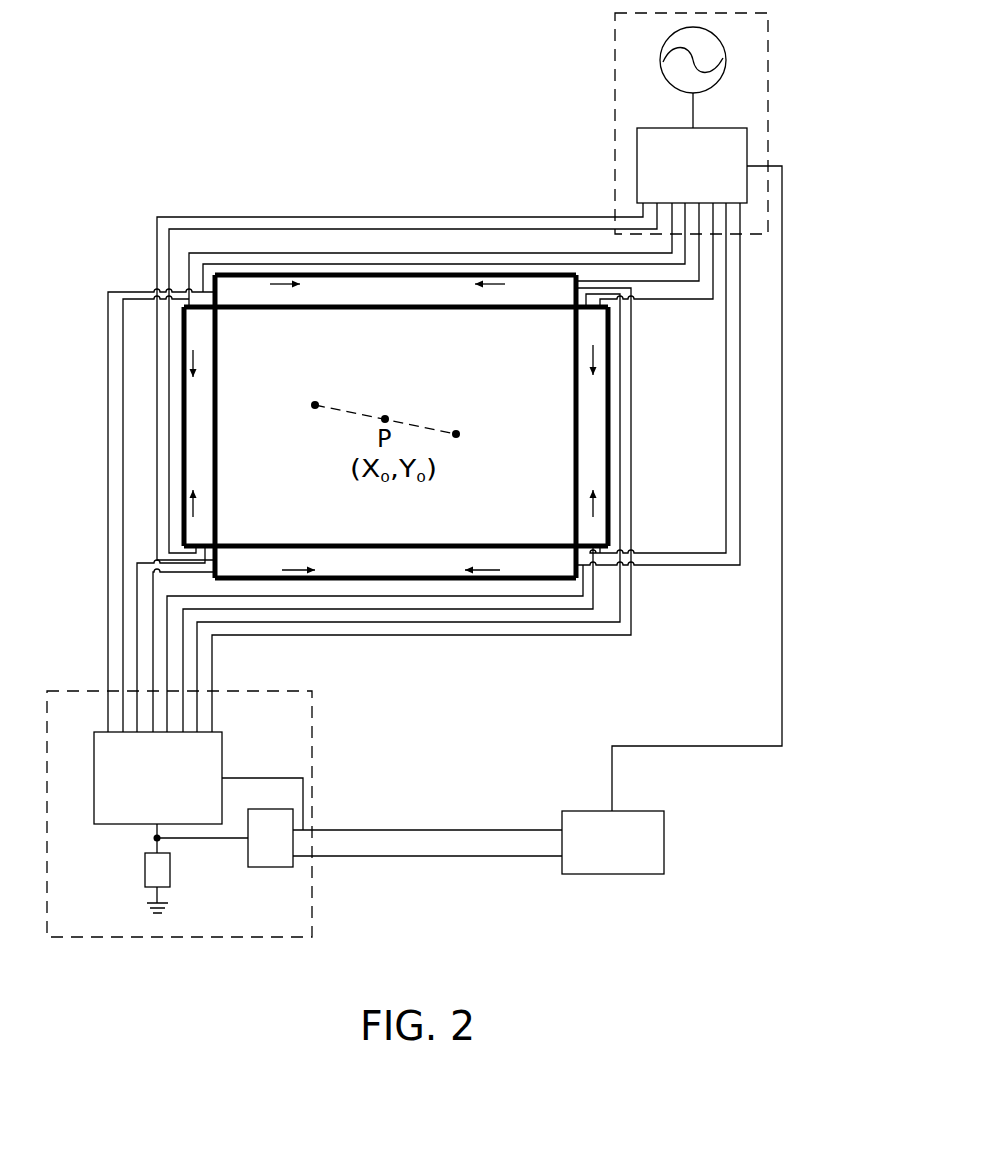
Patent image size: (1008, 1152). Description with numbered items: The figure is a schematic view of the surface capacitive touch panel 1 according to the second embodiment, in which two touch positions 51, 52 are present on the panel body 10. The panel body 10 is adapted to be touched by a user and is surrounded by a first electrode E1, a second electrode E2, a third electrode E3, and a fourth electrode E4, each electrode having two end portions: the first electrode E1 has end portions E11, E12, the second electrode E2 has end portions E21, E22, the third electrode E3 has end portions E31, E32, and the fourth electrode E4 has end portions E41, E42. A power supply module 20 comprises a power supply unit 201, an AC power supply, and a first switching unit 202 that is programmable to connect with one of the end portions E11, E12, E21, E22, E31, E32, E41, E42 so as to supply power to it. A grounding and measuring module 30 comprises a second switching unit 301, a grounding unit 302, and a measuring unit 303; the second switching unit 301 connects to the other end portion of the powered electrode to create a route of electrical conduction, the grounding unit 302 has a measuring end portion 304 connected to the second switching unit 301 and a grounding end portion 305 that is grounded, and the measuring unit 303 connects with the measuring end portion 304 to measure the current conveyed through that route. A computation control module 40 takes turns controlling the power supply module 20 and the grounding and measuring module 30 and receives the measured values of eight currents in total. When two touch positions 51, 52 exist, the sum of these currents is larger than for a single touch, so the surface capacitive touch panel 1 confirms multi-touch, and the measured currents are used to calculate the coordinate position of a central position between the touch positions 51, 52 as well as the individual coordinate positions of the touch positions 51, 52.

The surface capacitive touch panel 1 is at (186, 77).
The panel body 10 is at (385, 422).
The power supply module 20 is at (615, 101).
The power supply unit 201 is at (660, 56).
The first switching unit 202 is at (637, 165).
The grounding and measuring module 30 is at (312, 895).
The second switching unit 301 is at (222, 760).
The grounding unit 302 is at (170, 873).
The measuring unit 303 is at (293, 821).
The measuring end portion 304 is at (155, 843).
The grounding end portion 305 is at (152, 896).
The computation control module 40 is at (664, 825).
The touch position 51 is at (318, 403).
The touch position 52 is at (455, 432).
The first electrode E1 is at (388, 290).
The end portion E11 is at (222, 300).
The end portion E12 is at (534, 300).
The second electrode E2 is at (597, 432).
The end portion E21 is at (605, 322).
The end portion E22 is at (586, 543).
The third electrode E3 is at (398, 570).
The end portion E31 is at (535, 572).
The end portion E32 is at (241, 578).
The fourth electrode E4 is at (193, 443).
The end portion E41 is at (198, 538).
The end portion E42 is at (200, 322).